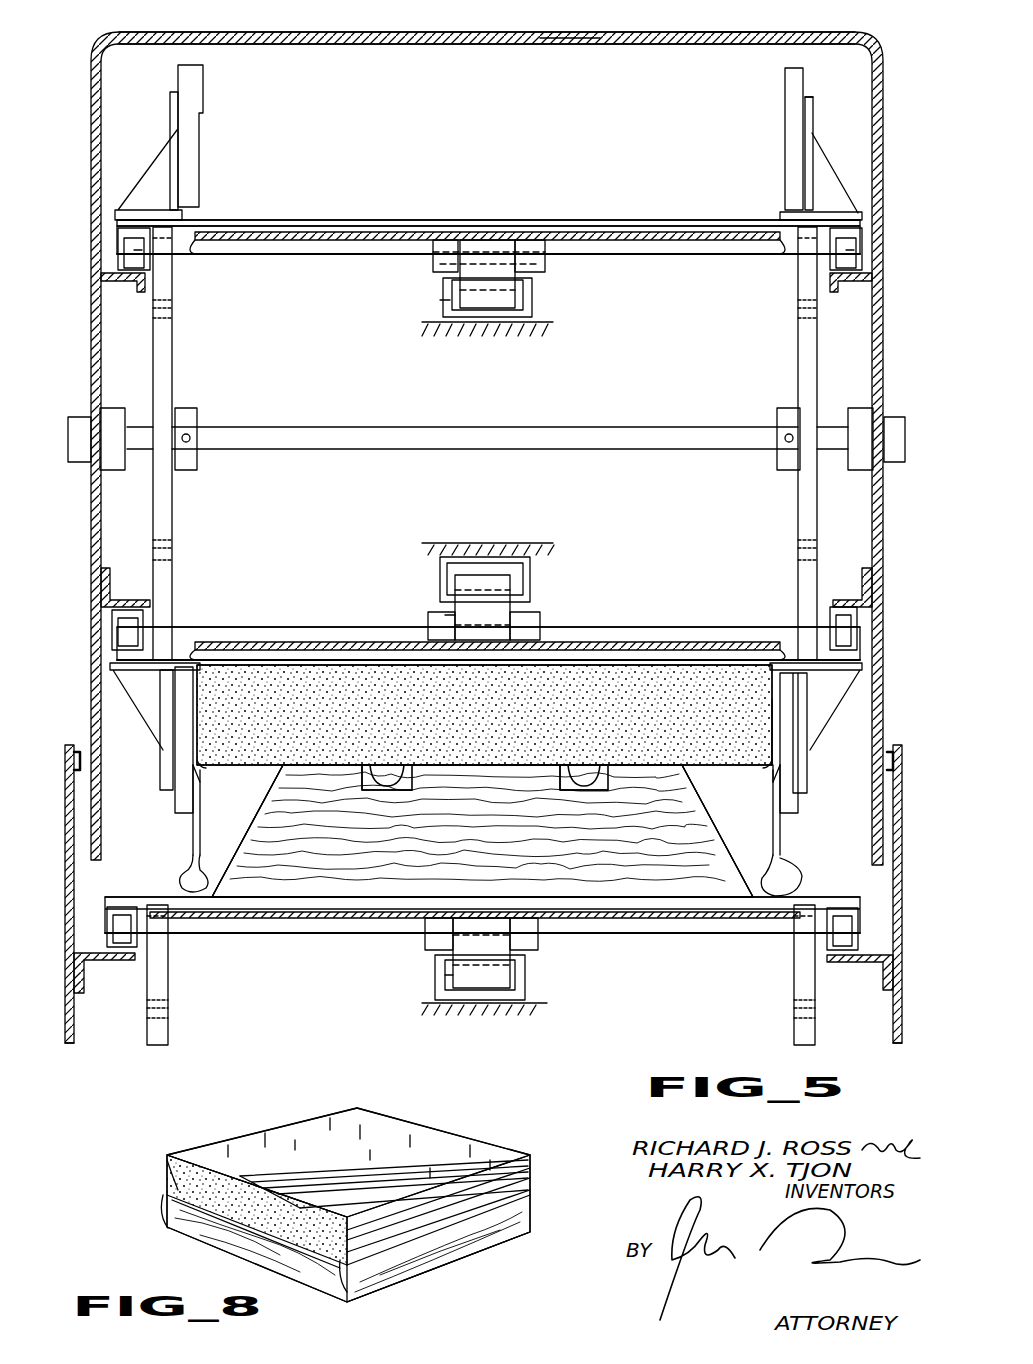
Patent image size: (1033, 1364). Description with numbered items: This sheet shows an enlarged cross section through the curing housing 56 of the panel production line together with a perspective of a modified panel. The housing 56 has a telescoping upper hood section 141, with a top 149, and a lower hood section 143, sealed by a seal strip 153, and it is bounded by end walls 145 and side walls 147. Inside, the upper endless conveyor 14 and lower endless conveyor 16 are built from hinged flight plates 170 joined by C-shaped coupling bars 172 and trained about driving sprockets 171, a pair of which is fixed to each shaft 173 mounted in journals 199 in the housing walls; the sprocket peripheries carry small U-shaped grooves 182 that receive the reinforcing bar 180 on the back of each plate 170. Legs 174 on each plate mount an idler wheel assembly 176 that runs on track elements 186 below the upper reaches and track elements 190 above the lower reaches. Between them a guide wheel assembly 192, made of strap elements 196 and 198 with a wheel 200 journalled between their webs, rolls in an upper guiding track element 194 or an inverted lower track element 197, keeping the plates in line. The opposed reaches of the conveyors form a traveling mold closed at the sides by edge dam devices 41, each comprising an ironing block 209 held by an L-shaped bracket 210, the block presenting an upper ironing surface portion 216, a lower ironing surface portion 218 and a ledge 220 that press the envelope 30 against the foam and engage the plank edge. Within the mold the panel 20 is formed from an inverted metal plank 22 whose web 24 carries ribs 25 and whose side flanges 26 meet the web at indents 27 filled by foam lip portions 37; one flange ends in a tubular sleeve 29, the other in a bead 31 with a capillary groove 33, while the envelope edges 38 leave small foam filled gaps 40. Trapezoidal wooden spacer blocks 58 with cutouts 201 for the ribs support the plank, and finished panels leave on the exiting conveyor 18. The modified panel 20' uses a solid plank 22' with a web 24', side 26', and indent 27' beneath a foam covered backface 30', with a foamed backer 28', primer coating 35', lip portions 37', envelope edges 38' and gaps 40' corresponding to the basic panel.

In FIG. 5, the upper endless conveyor 14 is at (480, 212).
In FIG. 5, the lower endless conveyor 16 is at (336, 942).
In FIG. 5, the panel exiting conveyor 18 is at (654, 640).
In FIG. 5, the panel 20 is at (484, 781).
In FIG. 5, the metal plank 22 is at (482, 728).
In FIG. 5, the web 24 is at (717, 829).
In FIG. 5, the longitudinally extending ribs 25 is at (412, 792).
In FIG. 5, the side flanges 26 is at (486, 811).
In FIG. 5, the indent or shoulder 27 is at (486, 796).
In FIG. 5, the deformable tubular sleeve 29 is at (802, 876).
In FIG. 5, the moisture impervious envelope 30 is at (484, 715).
In FIG. 5, the tubular bead 31 is at (178, 878).
In FIG. 5, the capillary groove 33 is at (218, 890).
In FIG. 5, the lip portions 37 is at (484, 742).
In FIG. 5, the free longitudinal edges 38 is at (768, 732).
In FIG. 5, the foam filled gaps 40 is at (813, 769).
In FIG. 5, the edge dam devices 41 is at (182, 732).
In FIG. 5, the housing 56 is at (414, 40).
In FIG. 5, the spacer blocks 58 is at (482, 831).
In FIG. 5, the upper hood section 141 is at (690, 38).
In FIG. 5, the lower hood section 143 is at (72, 855).
In FIG. 5, the end walls 145 is at (487, 67).
In FIG. 5, the side walls 147 is at (98, 112).
In FIG. 5, the top 149 is at (556, 36).
In FIG. 5, the seal strip 153 is at (70, 748).
In FIG. 5, the flight plates 170 is at (542, 220).
In FIG. 5, the driving sprockets 171 is at (172, 388).
In FIG. 5, the coupling bar 172 is at (234, 232).
In FIG. 5, the shaft 173 is at (455, 428).
In FIG. 5, the legs 174 is at (118, 262).
In FIG. 5, the idler wheel assembly 176 is at (145, 268).
In FIG. 5, the reinforcing bar 180 is at (678, 256).
In FIG. 5, the U-shaped grooves 182 is at (182, 336).
In FIG. 5, the track elements 186 is at (128, 290).
In FIG. 5, the track elements 190 is at (108, 570).
In FIG. 5, the guide wheel assembly 192 is at (436, 306).
In FIG. 5, the upper guiding track element 194 is at (500, 318).
In FIG. 5, the strap element 196 is at (432, 280).
In FIG. 5, the lower track element 197 is at (528, 580).
In FIG. 5, the strap element 198 is at (512, 262).
In FIG. 5, the journals 199 is at (78, 420).
In FIG. 5, the wheel 200 is at (532, 300).
In FIG. 5, the cutouts 201 is at (374, 790).
In FIG. 5, the ironing block 209 is at (206, 144).
In FIG. 5, the L-shaped bracket 210 is at (148, 182).
In FIG. 5, the upper ironing surface portion 216 is at (784, 80).
In FIG. 5, the lower ironing surface portion 218 is at (804, 152).
In FIG. 5, the ledge 220 is at (200, 118).
In FIG. 8, the modified panel 20' is at (348, 1178).
In FIG. 8, the solid plank 22' is at (348, 1248).
In FIG. 8, the web 24' is at (256, 1242).
In FIG. 8, the side 26' is at (438, 1278).
In FIG. 8, the indent 27' is at (234, 1260).
In FIG. 8, the foamed backer 28' is at (277, 1187).
In FIG. 8, the foam covered backface 30' is at (348, 1186).
In FIG. 8, the primer coating 35' is at (186, 1149).
In FIG. 8, the lip portions 37' is at (377, 1239).
In FIG. 8, the free longitudinal edges 38' is at (461, 1203).
In FIG. 8, the foam filled gaps 40' is at (476, 1221).